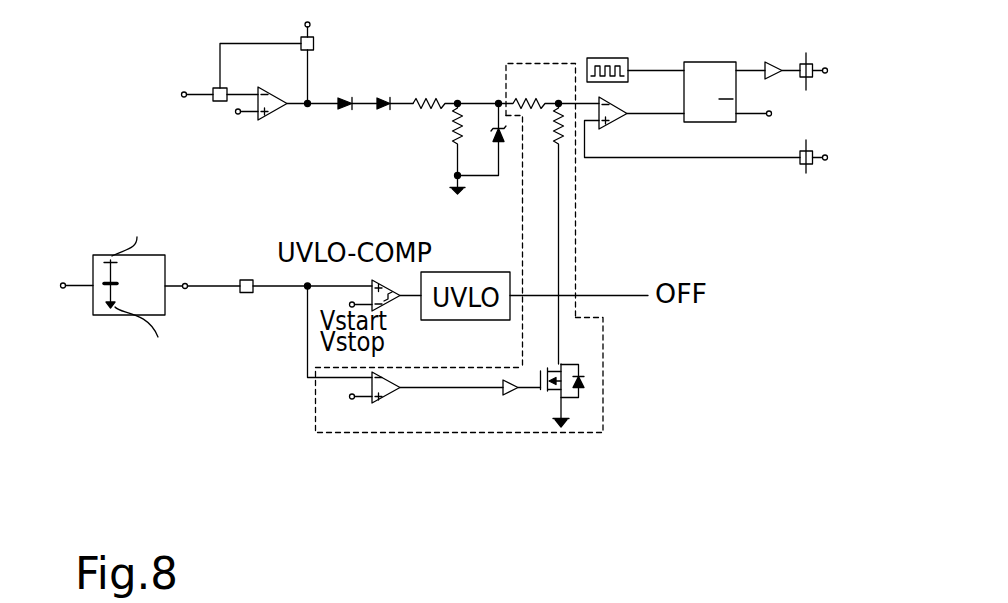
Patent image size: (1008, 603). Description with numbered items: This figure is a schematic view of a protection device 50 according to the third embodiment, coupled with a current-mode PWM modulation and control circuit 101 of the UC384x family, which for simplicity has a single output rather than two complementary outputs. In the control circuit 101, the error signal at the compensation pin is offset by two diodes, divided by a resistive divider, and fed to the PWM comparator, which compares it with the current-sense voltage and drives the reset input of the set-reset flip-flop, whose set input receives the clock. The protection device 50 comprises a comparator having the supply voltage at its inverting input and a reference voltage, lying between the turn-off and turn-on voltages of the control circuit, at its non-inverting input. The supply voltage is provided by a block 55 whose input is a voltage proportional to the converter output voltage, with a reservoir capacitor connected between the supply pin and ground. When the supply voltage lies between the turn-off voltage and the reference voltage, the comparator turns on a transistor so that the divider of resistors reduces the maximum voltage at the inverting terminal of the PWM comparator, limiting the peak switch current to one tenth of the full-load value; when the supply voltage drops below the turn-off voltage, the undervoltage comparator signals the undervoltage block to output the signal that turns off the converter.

The PWM modulation and control circuit 101 is at (140, 60).
The block 55 is at (102, 315).
The protection device 50 is at (657, 339).